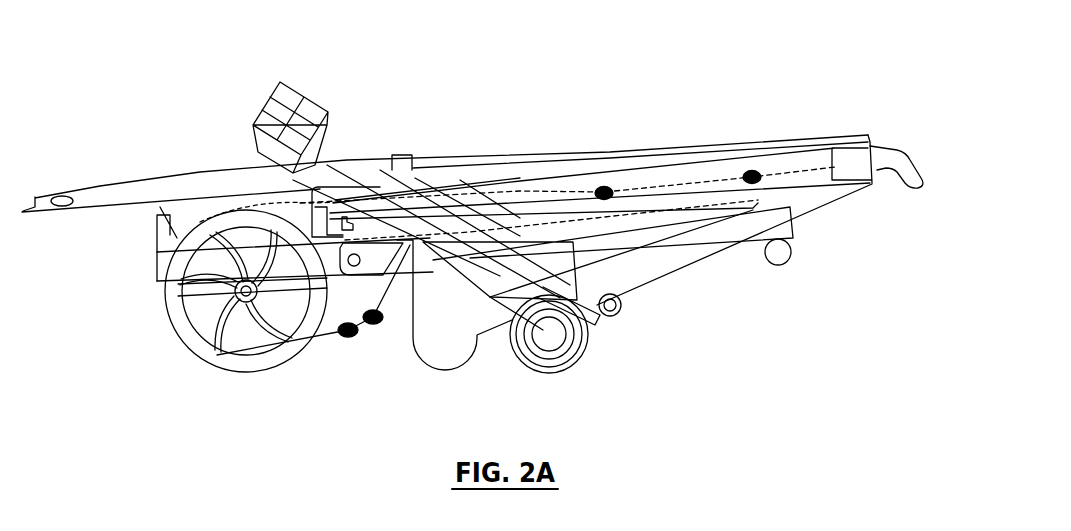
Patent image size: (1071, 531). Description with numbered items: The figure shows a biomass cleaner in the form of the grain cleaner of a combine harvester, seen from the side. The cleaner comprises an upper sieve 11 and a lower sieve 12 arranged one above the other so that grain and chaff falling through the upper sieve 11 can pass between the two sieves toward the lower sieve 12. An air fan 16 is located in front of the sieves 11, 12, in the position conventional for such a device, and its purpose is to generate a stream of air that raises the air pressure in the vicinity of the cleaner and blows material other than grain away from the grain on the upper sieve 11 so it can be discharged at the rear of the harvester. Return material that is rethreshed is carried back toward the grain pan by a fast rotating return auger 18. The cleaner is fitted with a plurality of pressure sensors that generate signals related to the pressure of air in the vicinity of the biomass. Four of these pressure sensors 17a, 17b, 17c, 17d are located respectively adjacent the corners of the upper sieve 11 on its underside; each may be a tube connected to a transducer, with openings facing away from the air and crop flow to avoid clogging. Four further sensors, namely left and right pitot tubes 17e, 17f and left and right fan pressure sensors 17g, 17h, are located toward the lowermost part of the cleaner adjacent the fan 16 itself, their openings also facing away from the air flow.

The upper sieve 11 is at (876, 160).
The lower sieve 12 is at (782, 232).
The air fan 16 is at (200, 347).
The pressure sensor 17a is at (651, 107).
The pressure sensor 17b is at (769, 99).
The pressure sensor 17c is at (750, 176).
The pressure sensor 17d is at (612, 189).
The left pitot tube 17e is at (239, 391).
The right pitot tube 17f is at (340, 338).
The left fan pressure sensor 17g is at (434, 365).
The right fan pressure sensor 17h is at (378, 325).
The return auger 18 is at (338, 135).